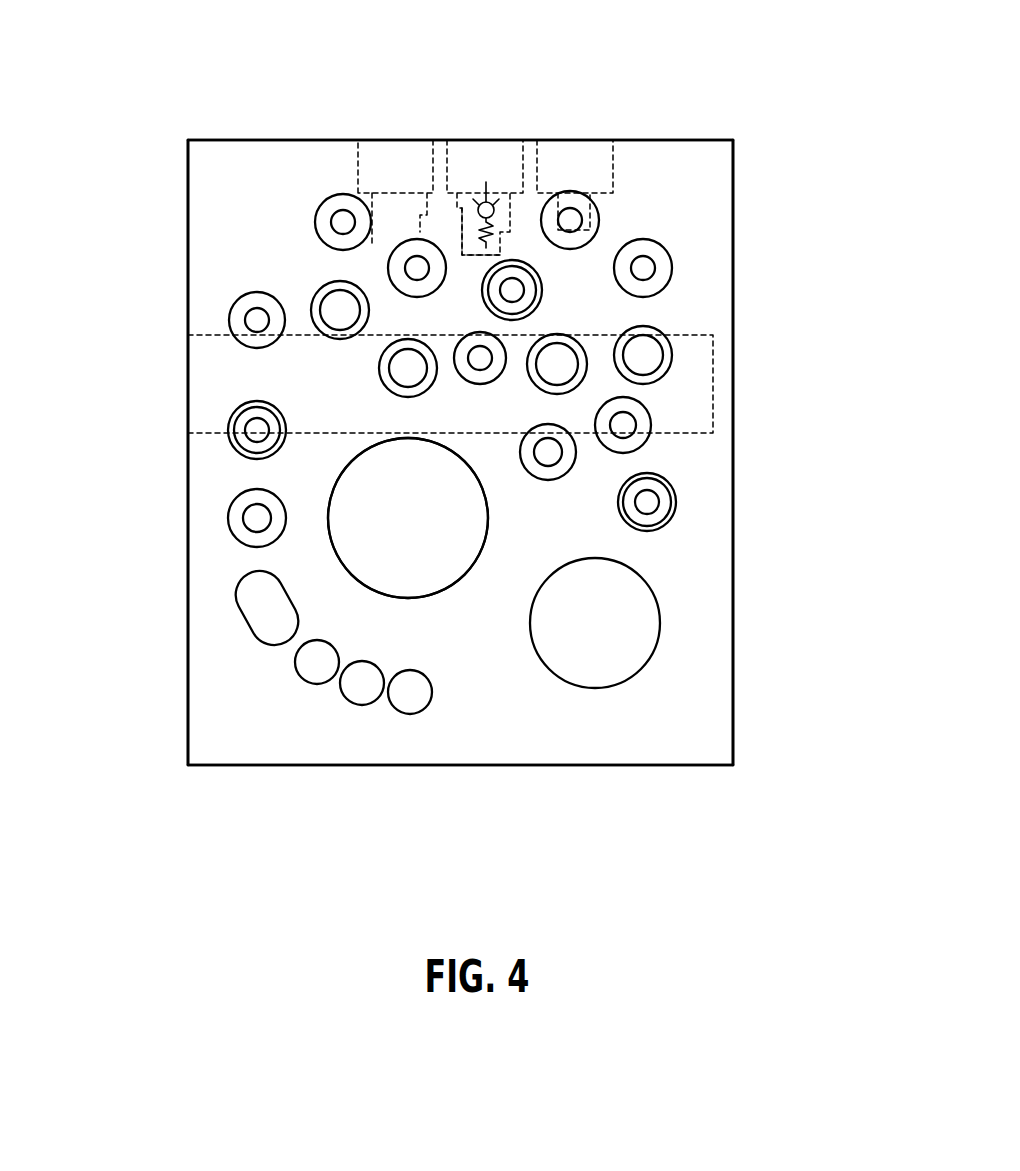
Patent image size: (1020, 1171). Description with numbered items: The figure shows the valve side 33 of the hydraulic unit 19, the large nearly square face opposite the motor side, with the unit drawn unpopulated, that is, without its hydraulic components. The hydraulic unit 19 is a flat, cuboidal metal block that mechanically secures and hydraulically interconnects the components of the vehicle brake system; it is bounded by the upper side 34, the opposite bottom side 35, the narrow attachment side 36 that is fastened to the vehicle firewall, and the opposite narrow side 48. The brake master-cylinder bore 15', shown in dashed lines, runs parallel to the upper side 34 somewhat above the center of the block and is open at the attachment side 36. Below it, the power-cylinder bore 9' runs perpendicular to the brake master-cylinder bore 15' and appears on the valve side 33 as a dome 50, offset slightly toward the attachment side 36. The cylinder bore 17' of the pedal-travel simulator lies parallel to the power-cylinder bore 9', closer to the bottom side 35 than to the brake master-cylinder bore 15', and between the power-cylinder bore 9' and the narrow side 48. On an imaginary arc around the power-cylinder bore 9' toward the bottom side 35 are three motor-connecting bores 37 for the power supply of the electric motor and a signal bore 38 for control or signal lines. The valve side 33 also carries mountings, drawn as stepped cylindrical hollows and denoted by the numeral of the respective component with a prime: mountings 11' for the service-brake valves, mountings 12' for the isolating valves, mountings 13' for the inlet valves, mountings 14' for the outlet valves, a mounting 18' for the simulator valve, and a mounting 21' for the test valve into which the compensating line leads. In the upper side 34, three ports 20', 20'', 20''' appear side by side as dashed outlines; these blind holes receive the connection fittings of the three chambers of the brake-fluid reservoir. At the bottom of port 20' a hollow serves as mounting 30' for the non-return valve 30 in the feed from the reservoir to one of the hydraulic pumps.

The hydraulic unit 19 is at (182, 108).
The upper side 34 is at (261, 128).
The bottom side 35 is at (252, 780).
The attachment side 36 is at (176, 200).
The narrow side 48 is at (748, 612).
The mounting for inlet valve 13' is at (497, 187).
The port 20' is at (395, 139).
The port 20'' is at (485, 138).
The port 20''' is at (577, 134).
The mounting for non-return valve 30' is at (463, 171).
The non-return valve 30 is at (500, 163).
The mounting for isolating valve 12' is at (346, 282).
The mounting for test valve 21' is at (199, 313).
The mounting for outlet valve 14' is at (461, 329).
The brake master-cylinder bore 15' is at (501, 384).
The mounting for service-brake valve 11' is at (450, 476).
The mounting for simulator valve 18' is at (708, 502).
The valve side 33 is at (527, 544).
The power-cylinder bore 9' is at (424, 630).
The dome 50 is at (408, 518).
The cylinder bore 17' is at (595, 688).
The motor-connecting bores 37 is at (313, 670).
The signal bore 38 is at (258, 614).